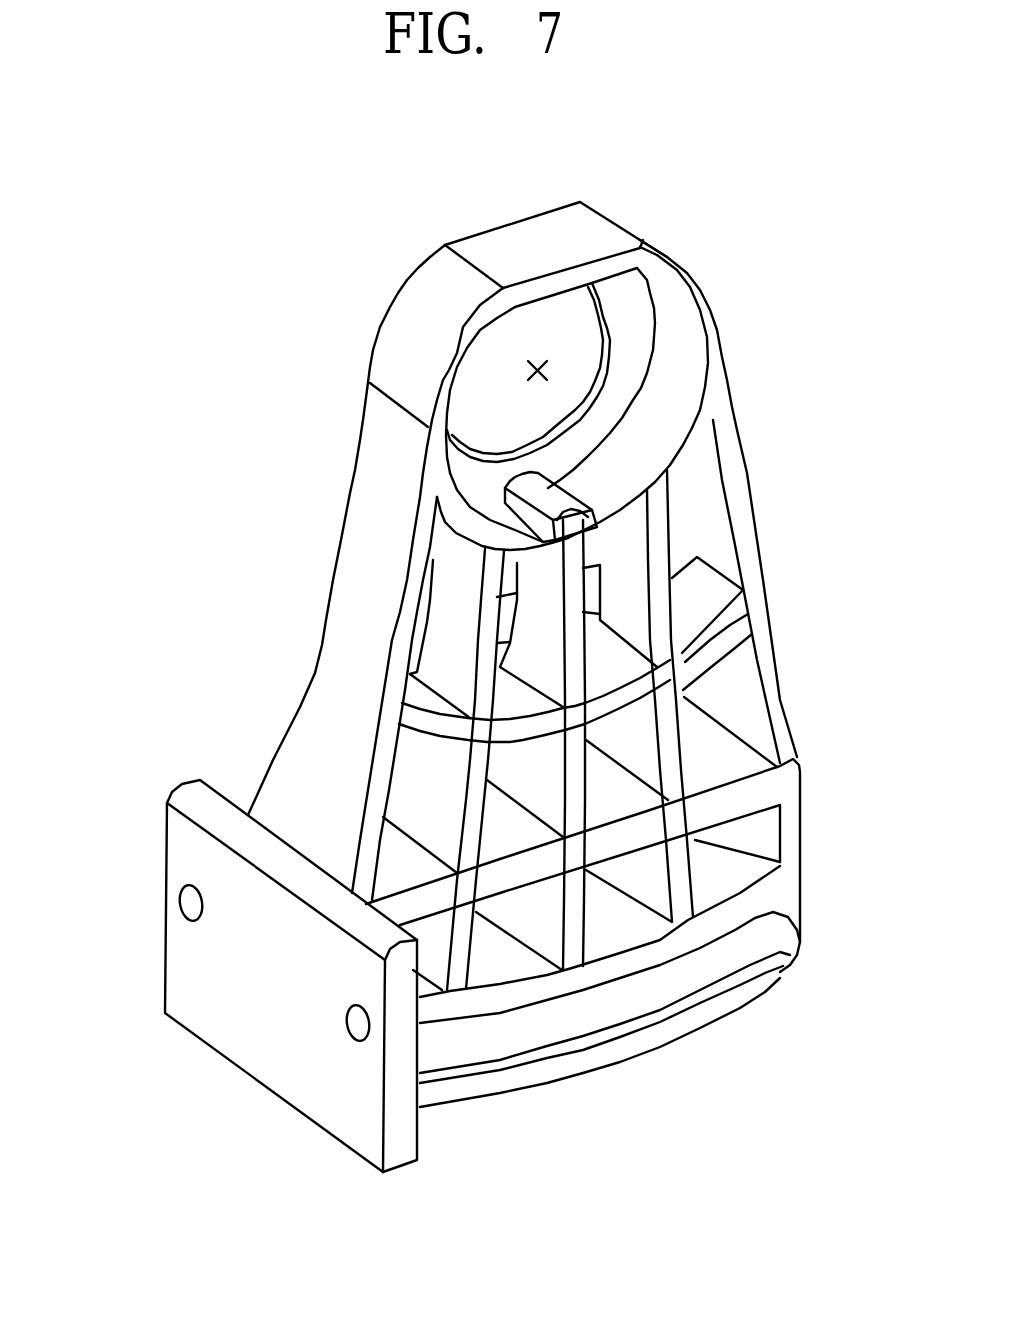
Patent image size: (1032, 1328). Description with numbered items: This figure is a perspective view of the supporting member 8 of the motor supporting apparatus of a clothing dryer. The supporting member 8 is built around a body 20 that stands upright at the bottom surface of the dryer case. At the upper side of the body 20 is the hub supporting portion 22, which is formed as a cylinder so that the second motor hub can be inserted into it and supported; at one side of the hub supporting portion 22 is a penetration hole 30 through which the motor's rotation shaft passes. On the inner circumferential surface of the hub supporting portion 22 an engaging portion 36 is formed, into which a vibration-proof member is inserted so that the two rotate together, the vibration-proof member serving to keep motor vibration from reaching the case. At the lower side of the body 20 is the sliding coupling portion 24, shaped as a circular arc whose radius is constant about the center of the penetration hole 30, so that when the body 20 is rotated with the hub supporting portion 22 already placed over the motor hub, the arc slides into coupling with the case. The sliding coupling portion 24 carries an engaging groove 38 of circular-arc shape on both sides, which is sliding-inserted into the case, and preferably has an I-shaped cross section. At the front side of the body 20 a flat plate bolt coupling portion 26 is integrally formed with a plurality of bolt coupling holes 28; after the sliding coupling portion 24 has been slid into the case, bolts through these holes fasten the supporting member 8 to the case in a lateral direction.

The supporting member 8 is at (569, 596).
The body 20 is at (632, 776).
The hub supporting portion 22 is at (652, 405).
The sliding coupling portion 24 is at (658, 1036).
The bolt coupling portion 26 is at (265, 990).
The bolt coupling holes 28 is at (209, 962).
The penetration hole 30 is at (402, 369).
The engaging portion 36 is at (421, 496).
The engaging groove 38 is at (664, 969).